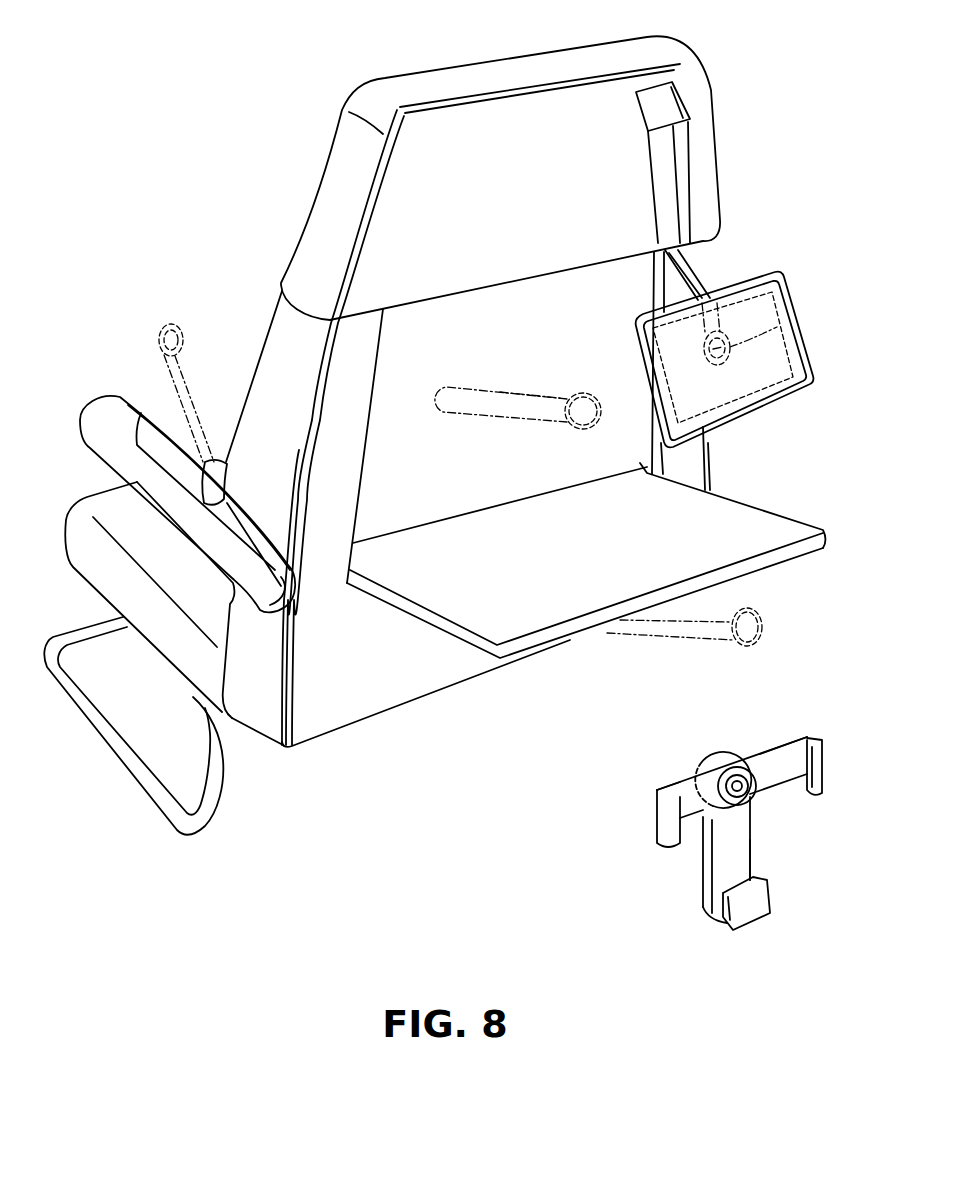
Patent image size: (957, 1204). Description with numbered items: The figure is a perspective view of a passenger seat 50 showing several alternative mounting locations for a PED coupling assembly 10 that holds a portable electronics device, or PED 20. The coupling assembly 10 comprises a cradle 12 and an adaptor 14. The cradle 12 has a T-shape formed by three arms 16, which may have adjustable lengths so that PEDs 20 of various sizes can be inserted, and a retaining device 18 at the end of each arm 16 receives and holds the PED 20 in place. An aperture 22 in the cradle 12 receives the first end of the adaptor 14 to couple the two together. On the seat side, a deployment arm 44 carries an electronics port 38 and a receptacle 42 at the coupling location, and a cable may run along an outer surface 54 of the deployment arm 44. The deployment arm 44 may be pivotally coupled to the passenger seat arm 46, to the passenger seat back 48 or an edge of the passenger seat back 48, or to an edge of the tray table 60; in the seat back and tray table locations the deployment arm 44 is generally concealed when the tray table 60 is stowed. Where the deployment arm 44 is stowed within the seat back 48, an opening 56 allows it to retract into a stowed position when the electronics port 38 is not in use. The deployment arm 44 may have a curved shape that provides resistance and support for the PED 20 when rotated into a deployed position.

The PED coupling assembly 10 is at (693, 820).
The cradle 12 is at (723, 833).
The adaptor 14 is at (760, 747).
The arm 16 is at (703, 785).
The retaining device 18 is at (663, 817).
The PED 20 is at (727, 413).
The aperture 22 is at (750, 803).
The electronics port 38 is at (777, 322).
The receptacle 42 is at (727, 337).
The deployment arm 44 is at (690, 300).
The passenger seat arm 46 is at (103, 438).
The passenger seat back 48 is at (485, 220).
The passenger seat 50 is at (290, 337).
The outer surface 54 is at (697, 281).
The opening 56 is at (690, 95).
The tray table 60 is at (419, 600).